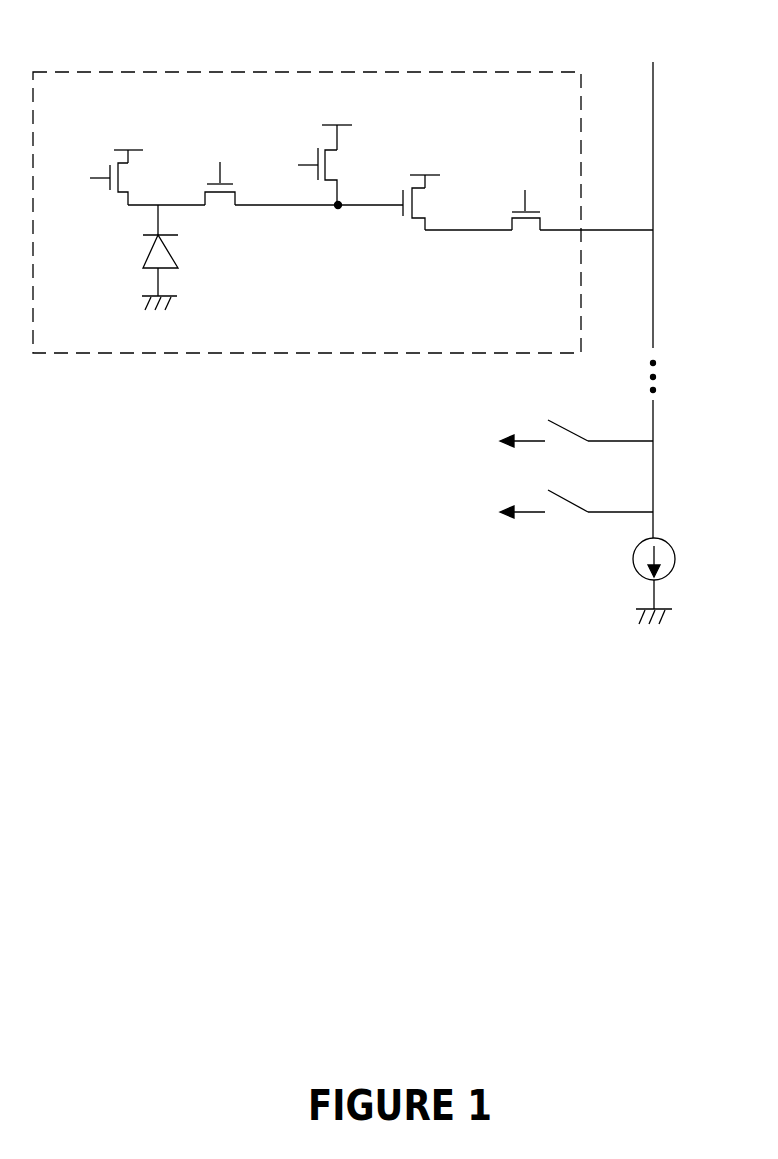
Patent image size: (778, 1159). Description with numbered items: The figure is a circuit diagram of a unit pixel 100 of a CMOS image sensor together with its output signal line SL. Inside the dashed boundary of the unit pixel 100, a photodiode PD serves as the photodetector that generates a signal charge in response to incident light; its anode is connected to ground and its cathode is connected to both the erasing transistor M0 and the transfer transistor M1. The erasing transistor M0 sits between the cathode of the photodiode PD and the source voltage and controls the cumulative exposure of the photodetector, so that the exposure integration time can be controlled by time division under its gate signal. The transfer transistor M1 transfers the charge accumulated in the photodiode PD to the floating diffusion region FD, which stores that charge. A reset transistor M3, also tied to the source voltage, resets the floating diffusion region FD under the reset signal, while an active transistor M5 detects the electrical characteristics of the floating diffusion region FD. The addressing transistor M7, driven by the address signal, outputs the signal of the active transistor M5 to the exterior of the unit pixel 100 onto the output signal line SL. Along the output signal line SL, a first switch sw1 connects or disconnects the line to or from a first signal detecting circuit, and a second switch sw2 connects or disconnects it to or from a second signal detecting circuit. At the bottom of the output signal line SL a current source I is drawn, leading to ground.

The unit pixel 100 is at (127, 72).
The erasing transistor M0 is at (108, 165).
The photodiode PD is at (145, 257).
The transfer transistor M1 is at (220, 187).
The reset transistor M3 is at (320, 153).
The floating diffusion region FD is at (338, 217).
The active transistor M5 is at (428, 191).
The addressing transistor M7 is at (526, 214).
The output signal line SL is at (651, 120).
The first switch sw1 is at (543, 447).
The second switch sw2 is at (543, 517).
The current source I is at (647, 581).